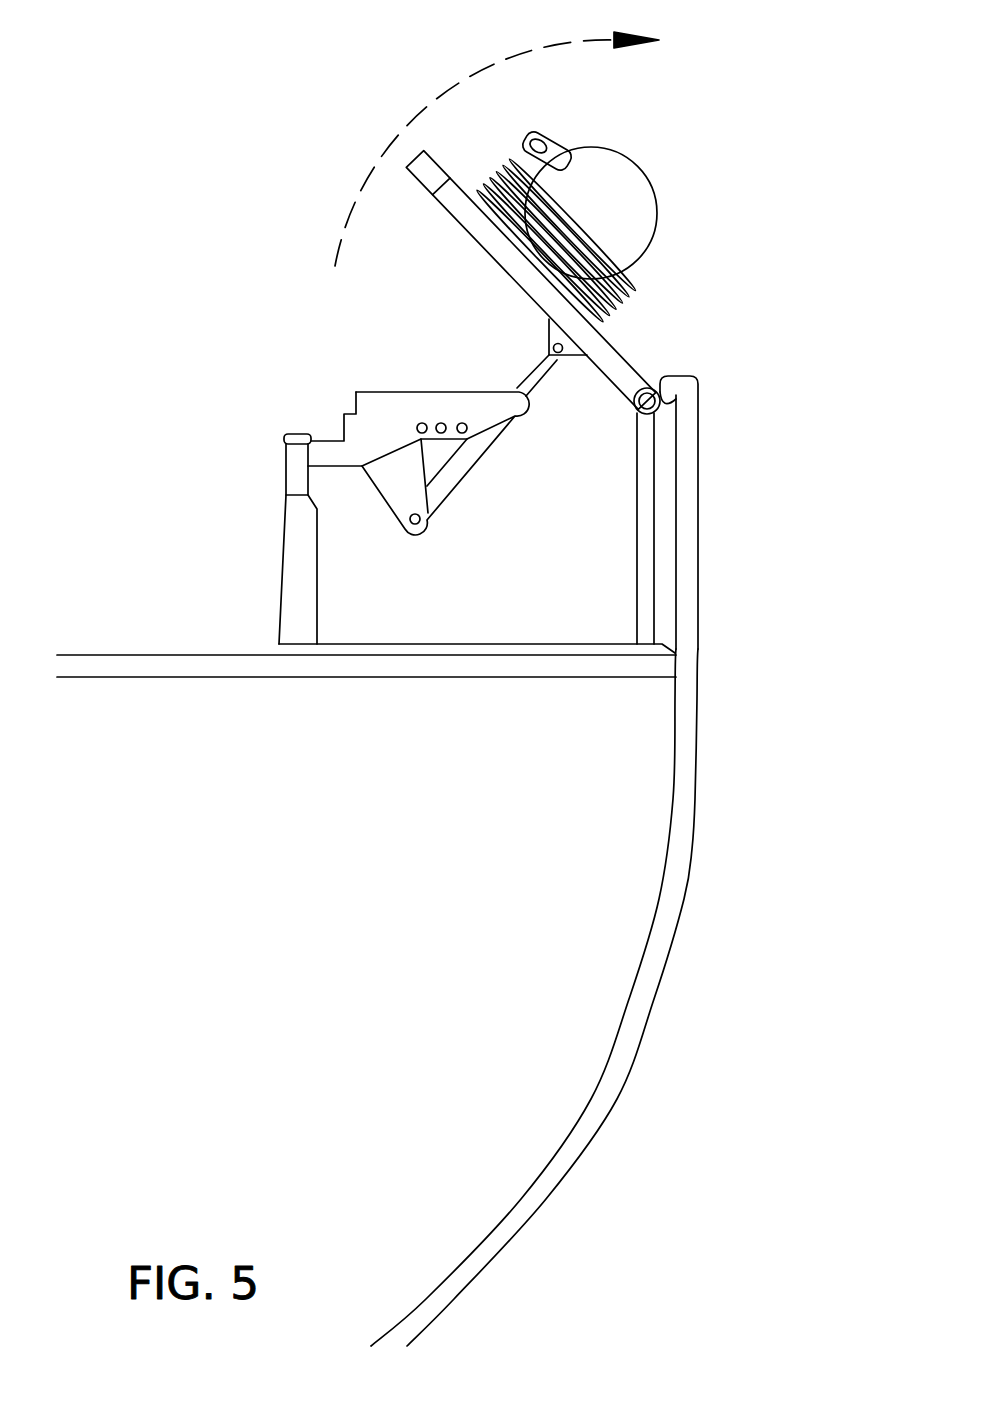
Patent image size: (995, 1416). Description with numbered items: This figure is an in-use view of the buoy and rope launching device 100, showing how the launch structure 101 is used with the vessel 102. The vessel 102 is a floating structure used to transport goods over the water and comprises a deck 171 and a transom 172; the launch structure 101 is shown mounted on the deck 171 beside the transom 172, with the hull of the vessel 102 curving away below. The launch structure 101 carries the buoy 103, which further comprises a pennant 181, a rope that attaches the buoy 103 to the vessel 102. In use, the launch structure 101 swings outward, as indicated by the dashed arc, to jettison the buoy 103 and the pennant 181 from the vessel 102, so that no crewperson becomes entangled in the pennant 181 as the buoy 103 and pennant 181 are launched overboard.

The buoy and rope launching device 100 is at (256, 98).
The launch structure 101 is at (286, 358).
The vessel 102 is at (694, 850).
The buoy 103 is at (628, 182).
The deck 171 is at (155, 663).
The transom 172 is at (700, 512).
The pennant 181 is at (626, 303).